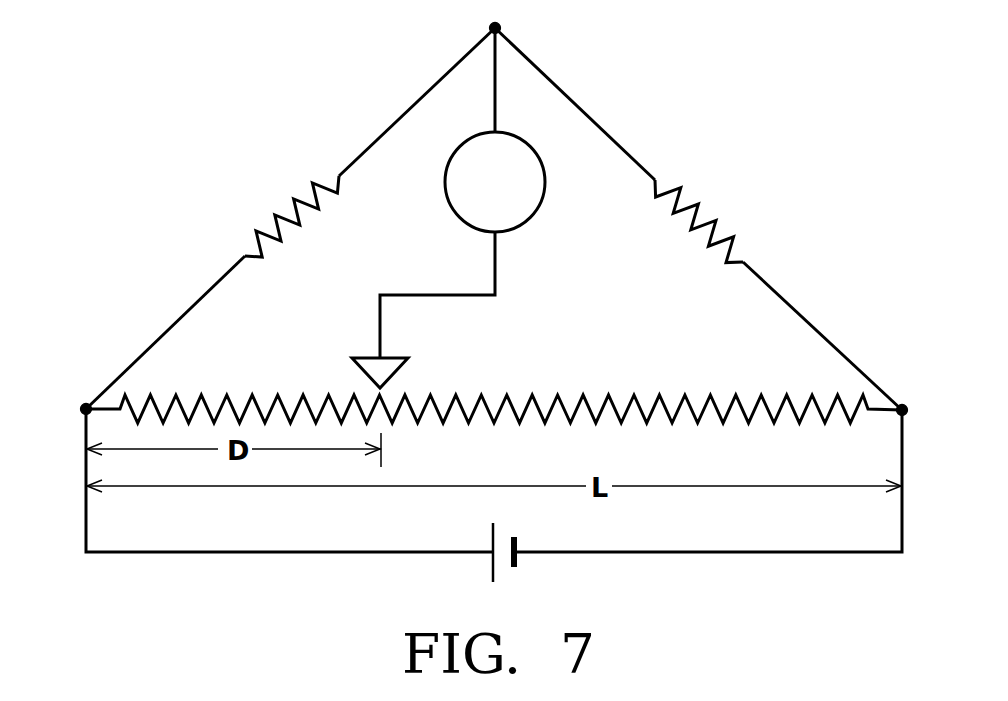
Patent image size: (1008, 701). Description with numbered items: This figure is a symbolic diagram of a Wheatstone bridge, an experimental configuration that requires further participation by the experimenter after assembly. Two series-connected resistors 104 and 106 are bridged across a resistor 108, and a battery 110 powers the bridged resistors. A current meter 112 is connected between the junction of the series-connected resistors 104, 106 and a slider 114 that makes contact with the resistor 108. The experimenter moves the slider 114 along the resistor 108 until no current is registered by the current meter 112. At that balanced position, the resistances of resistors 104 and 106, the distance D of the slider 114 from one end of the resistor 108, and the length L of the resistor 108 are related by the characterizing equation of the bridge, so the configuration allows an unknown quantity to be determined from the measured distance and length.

The resistor 104 is at (293, 198).
The resistor 106 is at (700, 208).
The resistor 108 is at (607, 396).
The battery 110 is at (500, 567).
The current meter 112 is at (517, 222).
The slider 114 is at (387, 357).